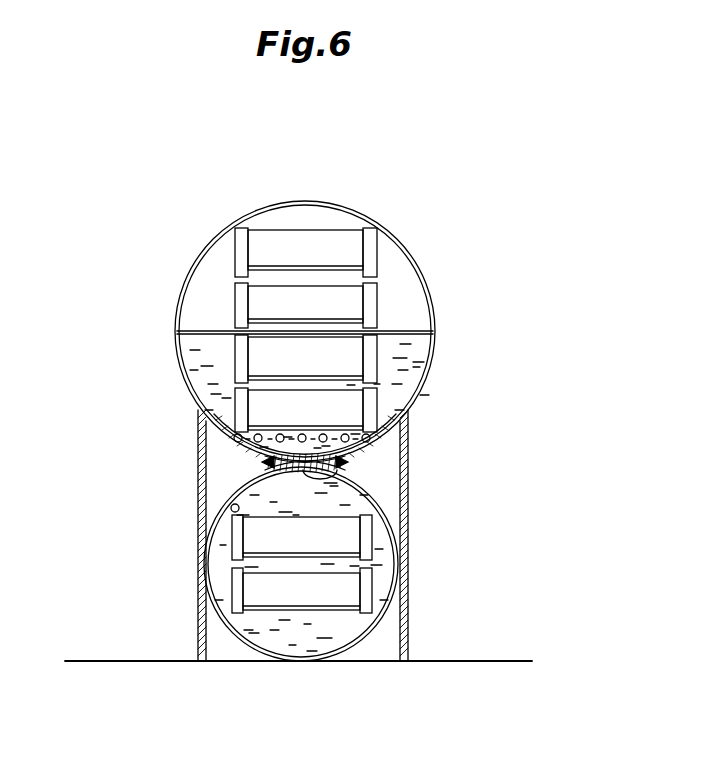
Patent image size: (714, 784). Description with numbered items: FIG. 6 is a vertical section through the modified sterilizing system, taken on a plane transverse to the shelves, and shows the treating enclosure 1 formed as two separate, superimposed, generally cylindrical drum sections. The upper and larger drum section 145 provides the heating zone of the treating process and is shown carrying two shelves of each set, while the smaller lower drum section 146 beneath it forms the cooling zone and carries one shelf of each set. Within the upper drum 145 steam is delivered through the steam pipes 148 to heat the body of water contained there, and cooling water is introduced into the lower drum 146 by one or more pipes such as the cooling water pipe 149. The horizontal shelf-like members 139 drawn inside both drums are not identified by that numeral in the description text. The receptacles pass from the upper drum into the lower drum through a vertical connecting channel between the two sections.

The treating enclosure 1 is at (348, 475).
The heat exchange tubes 139 is at (352, 268).
The upper drum section 145 is at (300, 201).
The lower drum section 146 is at (340, 658).
The steam pipes 148 is at (226, 442).
The cooling water pipe 149 is at (231, 511).